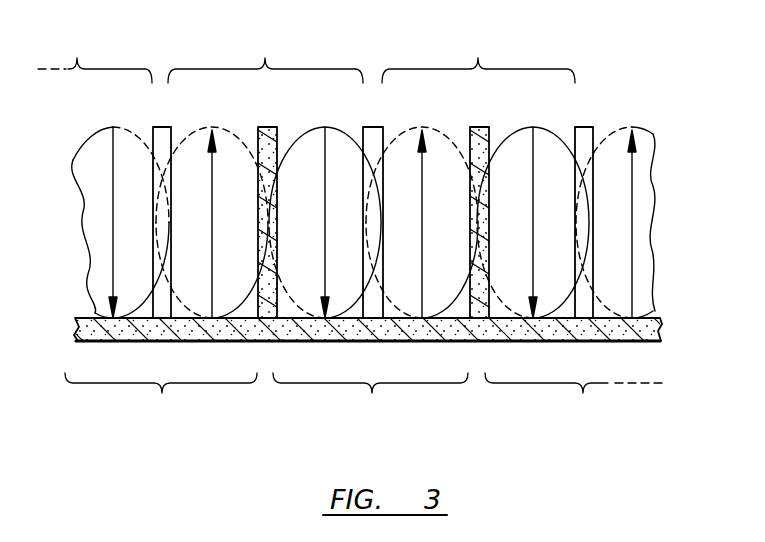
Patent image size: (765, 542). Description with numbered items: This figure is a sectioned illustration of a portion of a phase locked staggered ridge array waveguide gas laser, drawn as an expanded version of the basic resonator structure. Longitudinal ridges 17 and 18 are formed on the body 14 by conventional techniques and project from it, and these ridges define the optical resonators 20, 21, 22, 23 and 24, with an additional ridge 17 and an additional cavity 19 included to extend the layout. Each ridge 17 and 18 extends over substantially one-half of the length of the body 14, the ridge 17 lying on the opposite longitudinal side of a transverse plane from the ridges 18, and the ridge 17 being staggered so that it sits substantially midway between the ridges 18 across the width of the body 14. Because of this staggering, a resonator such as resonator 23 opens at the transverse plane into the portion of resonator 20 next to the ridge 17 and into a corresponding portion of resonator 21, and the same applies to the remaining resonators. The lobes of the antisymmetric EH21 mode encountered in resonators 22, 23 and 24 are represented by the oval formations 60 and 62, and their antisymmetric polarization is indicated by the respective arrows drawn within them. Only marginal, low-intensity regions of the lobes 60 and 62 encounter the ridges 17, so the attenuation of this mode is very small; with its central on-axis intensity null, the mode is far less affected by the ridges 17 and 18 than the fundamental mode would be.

The body 14 is at (662, 327).
The ridge 17 is at (161, 127).
The ridge 18 is at (268, 127).
The cavity 19 is at (95, 60).
The optical resonator 20 is at (265, 60).
The optical resonator 21 is at (478, 60).
The optical resonator 22 is at (161, 398).
The optical resonator 23 is at (370, 398).
The optical resonator 24 is at (575, 398).
The oval formation 60 is at (128, 139).
The oval formation 62 is at (230, 142).